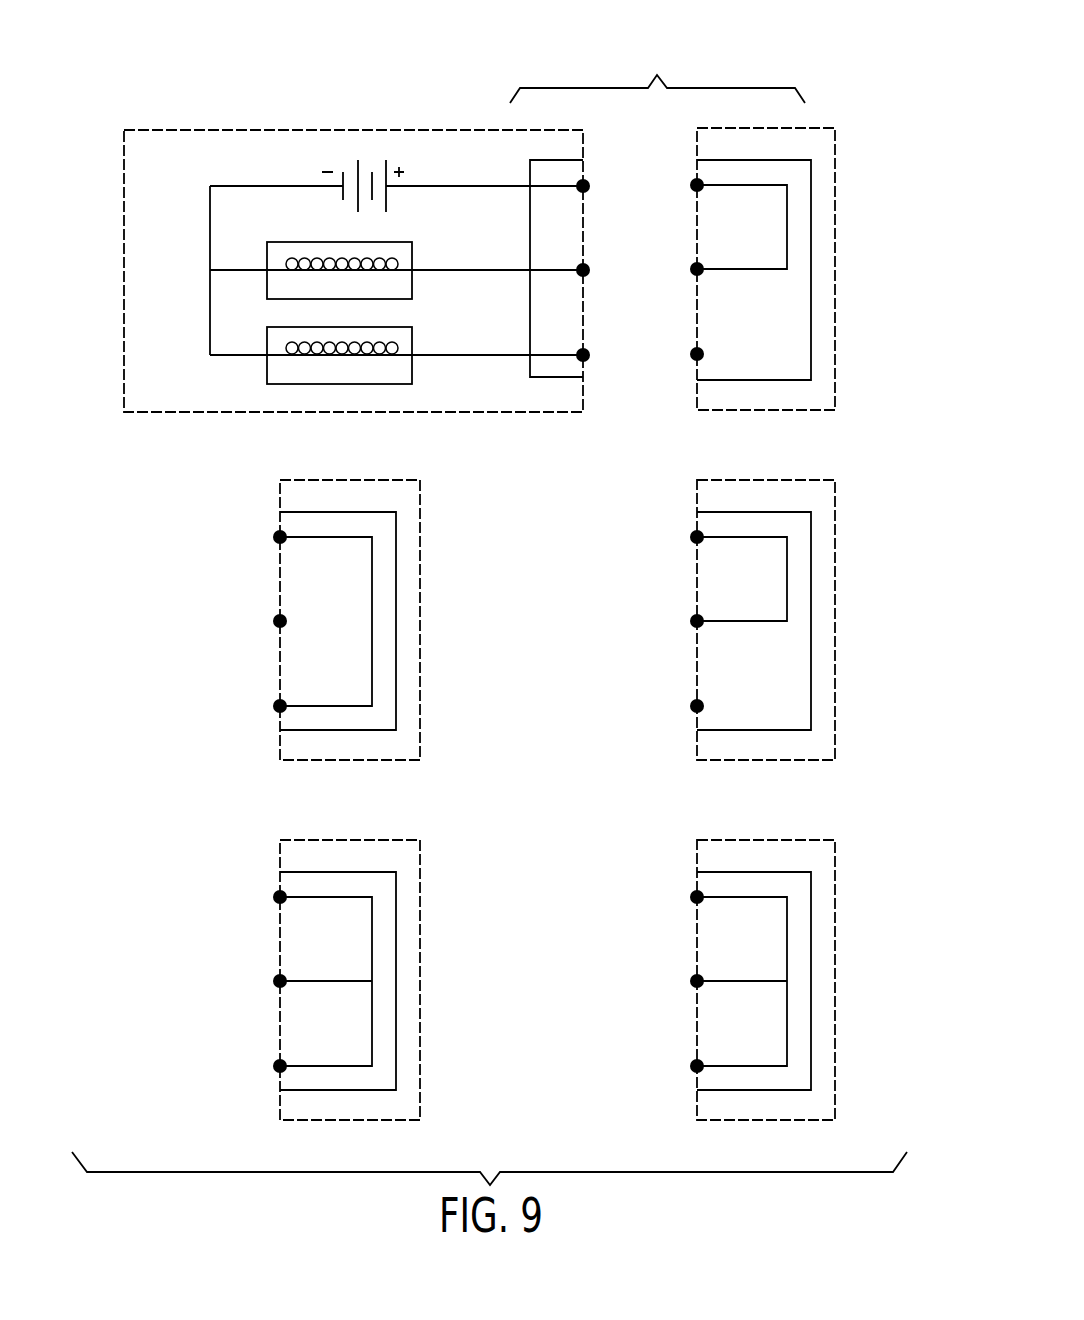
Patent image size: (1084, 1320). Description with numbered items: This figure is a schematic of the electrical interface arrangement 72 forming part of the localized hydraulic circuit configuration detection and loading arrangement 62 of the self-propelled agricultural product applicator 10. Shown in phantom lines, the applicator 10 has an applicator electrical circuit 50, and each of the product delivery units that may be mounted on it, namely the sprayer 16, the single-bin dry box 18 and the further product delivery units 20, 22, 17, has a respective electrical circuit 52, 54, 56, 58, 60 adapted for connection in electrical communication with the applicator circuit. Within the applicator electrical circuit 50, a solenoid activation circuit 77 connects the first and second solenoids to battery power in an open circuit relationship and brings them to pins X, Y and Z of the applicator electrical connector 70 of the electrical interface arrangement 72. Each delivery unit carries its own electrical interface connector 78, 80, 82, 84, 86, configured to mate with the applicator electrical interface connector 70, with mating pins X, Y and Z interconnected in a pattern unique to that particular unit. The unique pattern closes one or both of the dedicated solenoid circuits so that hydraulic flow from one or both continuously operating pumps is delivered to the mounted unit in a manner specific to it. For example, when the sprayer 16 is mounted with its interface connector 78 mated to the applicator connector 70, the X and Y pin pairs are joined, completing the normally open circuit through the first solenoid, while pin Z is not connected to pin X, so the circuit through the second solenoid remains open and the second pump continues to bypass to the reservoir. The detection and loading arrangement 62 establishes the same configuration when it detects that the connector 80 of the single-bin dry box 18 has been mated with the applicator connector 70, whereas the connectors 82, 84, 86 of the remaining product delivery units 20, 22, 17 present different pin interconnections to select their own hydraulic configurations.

The applicator 10 is at (355, 130).
The sprayer 16 is at (812, 130).
The product delivery unit 17 is at (350, 480).
The single-bin dry box 18 is at (808, 480).
The product delivery unit 20 is at (808, 840).
The product delivery unit 22 is at (392, 840).
The applicator electrical circuit 50 is at (530, 130).
The electrical circuit 52 is at (773, 130).
The electrical circuit 54 is at (767, 480).
The electrical circuit 56 is at (767, 840).
The electrical circuit 58 is at (350, 840).
The electrical circuit 60 is at (392, 480).
The localized hydraulic circuit configuration detection and loading arrangement 62 is at (606, 39).
The applicator electrical connector 70 is at (534, 368).
The electrical interface arrangement 72 is at (657, 75).
The solenoid activation circuit 77 is at (210, 233).
The electrical interface connector 78 is at (811, 270).
The electrical interface connector 80 is at (811, 568).
The electrical interface connector 82 is at (811, 928).
The electrical interface connector 84 is at (396, 928).
The electrical interface connector 86 is at (396, 568).